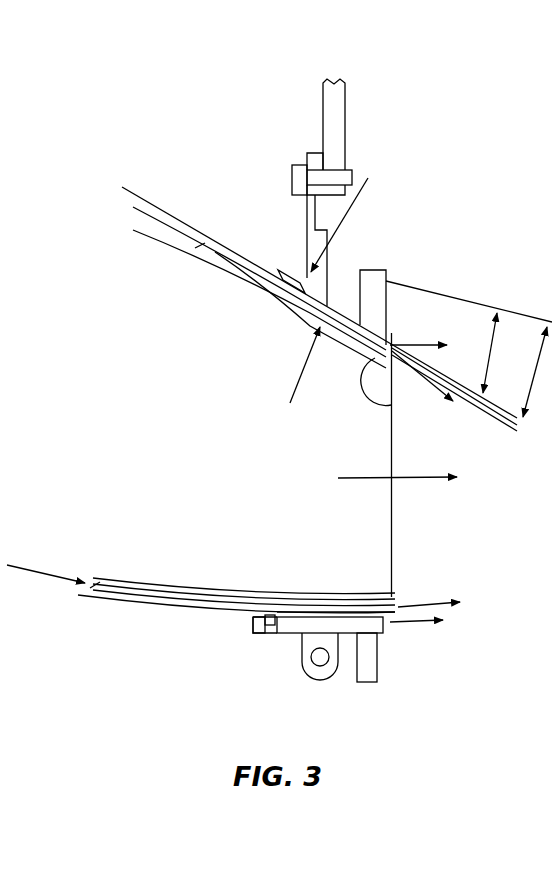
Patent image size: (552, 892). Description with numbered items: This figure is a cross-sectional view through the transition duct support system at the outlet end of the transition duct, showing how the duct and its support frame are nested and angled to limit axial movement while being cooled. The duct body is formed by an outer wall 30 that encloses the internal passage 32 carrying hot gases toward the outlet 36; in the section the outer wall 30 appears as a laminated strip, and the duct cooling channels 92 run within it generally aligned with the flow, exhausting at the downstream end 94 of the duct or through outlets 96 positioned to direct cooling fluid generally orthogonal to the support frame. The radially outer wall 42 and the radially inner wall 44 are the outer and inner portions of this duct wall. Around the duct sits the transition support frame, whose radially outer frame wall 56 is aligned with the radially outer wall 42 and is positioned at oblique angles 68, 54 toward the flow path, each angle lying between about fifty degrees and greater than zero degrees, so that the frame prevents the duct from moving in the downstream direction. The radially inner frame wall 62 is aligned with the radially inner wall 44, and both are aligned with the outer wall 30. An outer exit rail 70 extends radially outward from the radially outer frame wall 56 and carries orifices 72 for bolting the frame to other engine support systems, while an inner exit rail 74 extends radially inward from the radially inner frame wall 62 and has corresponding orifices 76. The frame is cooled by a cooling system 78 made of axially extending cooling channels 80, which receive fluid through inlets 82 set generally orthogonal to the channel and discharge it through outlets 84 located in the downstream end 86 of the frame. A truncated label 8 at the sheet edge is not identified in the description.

The partial numeral (cut off at sheet edge) 8 is at (5, 154).
The outer wall 30 is at (196, 232).
The internal passage 32 is at (347, 440).
The outlet 36 is at (392, 457).
The radially outer wall 42 is at (392, 407).
The radially inner wall 44 is at (308, 613).
The oblique angle 54 is at (537, 372).
The radially outer frame wall 56 is at (392, 330).
The radially inner frame wall 62 is at (390, 637).
The oblique angle 68 is at (483, 353).
The outer exit rail 70 is at (307, 213).
The orifices 72 is at (336, 170).
The inner exit rail 74 is at (378, 658).
The orifices 76 is at (319, 663).
The cooling system 78 is at (391, 266).
The cooling channels 80 is at (348, 312).
The inlets 82 is at (304, 277).
The outlets 84 is at (390, 340).
The downstream end 86 is at (390, 338).
The duct cooling channels 92 is at (220, 260).
The downstream end 94 is at (392, 355).
The outlets 96 is at (392, 356).